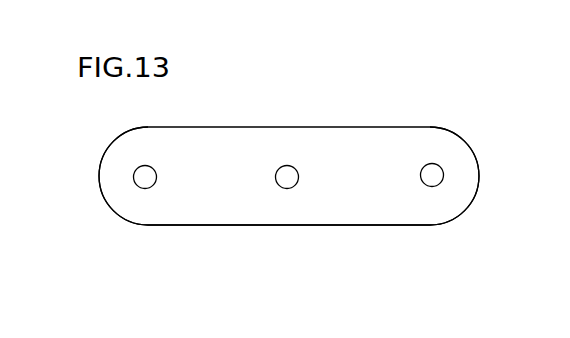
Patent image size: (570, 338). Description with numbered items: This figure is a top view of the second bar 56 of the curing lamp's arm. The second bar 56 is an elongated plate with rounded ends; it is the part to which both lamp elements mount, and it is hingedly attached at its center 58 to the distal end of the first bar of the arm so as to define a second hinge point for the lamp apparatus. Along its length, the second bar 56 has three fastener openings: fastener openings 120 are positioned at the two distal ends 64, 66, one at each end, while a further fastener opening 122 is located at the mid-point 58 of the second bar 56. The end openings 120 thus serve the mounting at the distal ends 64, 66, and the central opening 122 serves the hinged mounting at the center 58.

The second bar 56 is at (412, 105).
The center 58 is at (288, 225).
The distal end 64 is at (97, 177).
The distal end 66 is at (480, 175).
The fastener opening 120 is at (153, 185).
The fastener opening 122 is at (295, 185).